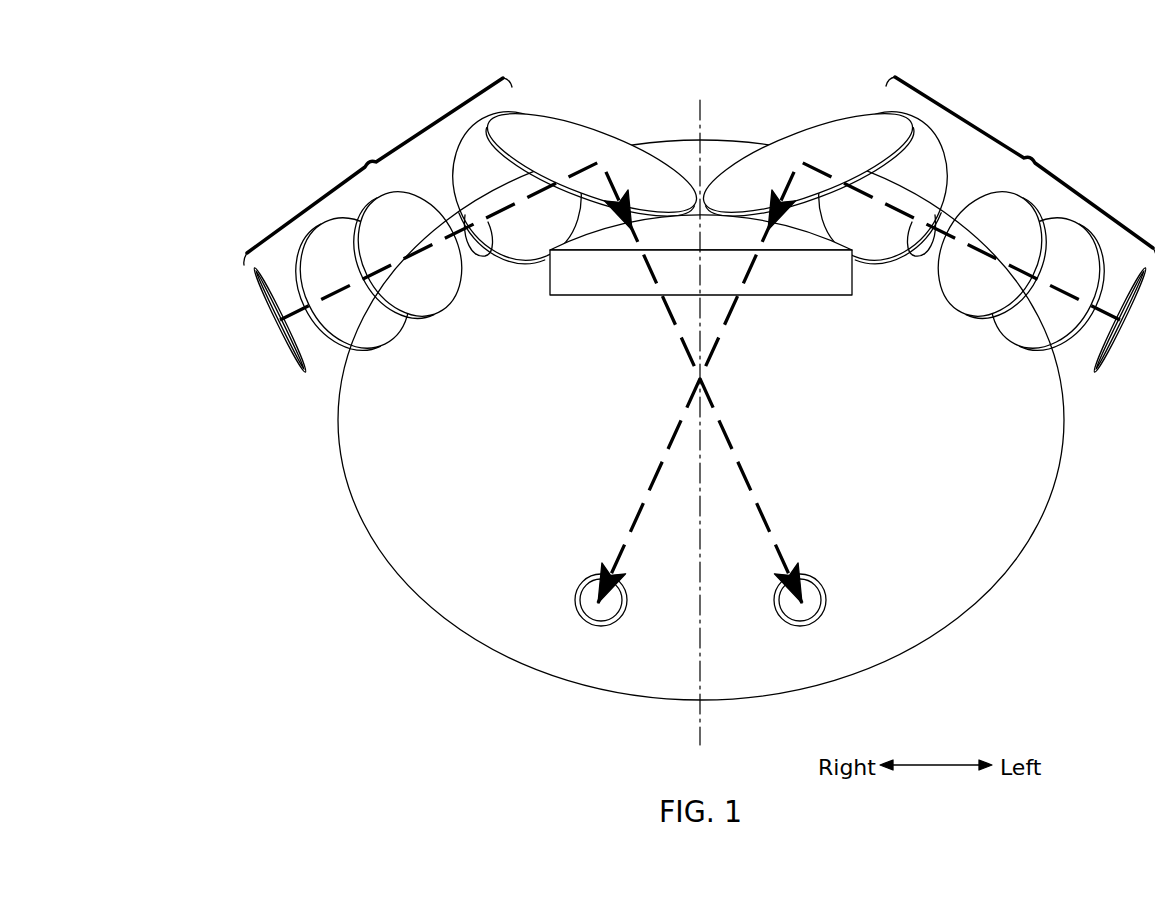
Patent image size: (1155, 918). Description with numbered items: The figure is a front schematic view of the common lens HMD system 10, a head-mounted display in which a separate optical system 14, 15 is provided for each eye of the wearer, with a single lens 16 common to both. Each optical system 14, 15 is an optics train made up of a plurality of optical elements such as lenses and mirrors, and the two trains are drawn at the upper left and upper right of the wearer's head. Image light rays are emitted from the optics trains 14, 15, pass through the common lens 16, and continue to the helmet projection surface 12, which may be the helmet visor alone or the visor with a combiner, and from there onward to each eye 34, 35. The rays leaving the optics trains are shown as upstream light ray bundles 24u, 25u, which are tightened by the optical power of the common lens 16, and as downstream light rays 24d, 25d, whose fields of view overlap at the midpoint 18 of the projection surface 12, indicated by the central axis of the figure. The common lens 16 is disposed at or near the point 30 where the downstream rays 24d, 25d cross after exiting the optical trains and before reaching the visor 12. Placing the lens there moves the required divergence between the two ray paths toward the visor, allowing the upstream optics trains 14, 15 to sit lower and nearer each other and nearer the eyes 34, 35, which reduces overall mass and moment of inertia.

The common lens HMD system 10 is at (240, 119).
The helmet projection surface 12 is at (390, 574).
The optical system 14 is at (424, 226).
The optical system 15 is at (975, 225).
The common lens 16 is at (570, 288).
The midpoint 18 is at (698, 710).
The upstream light ray bundle 24u is at (453, 207).
The downstream light rays 24d is at (735, 452).
The upstream light ray bundle 25u is at (878, 212).
The downstream light rays 25d is at (668, 448).
The crossing point 30 is at (705, 377).
The eye 34 is at (828, 604).
The eye 35 is at (578, 612).